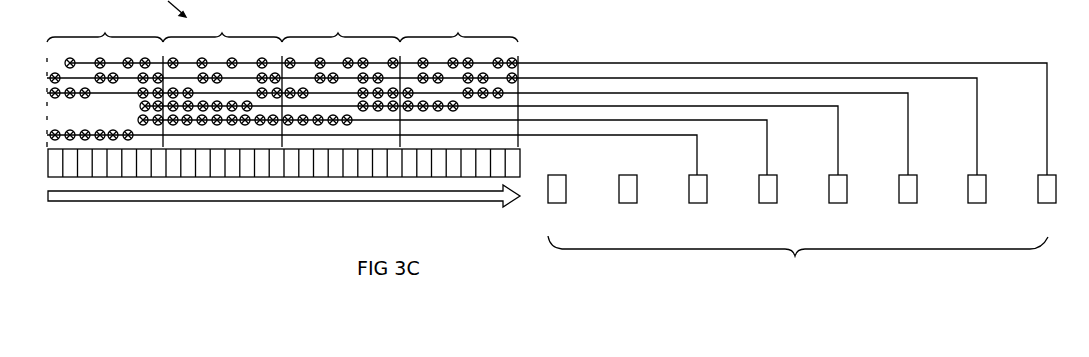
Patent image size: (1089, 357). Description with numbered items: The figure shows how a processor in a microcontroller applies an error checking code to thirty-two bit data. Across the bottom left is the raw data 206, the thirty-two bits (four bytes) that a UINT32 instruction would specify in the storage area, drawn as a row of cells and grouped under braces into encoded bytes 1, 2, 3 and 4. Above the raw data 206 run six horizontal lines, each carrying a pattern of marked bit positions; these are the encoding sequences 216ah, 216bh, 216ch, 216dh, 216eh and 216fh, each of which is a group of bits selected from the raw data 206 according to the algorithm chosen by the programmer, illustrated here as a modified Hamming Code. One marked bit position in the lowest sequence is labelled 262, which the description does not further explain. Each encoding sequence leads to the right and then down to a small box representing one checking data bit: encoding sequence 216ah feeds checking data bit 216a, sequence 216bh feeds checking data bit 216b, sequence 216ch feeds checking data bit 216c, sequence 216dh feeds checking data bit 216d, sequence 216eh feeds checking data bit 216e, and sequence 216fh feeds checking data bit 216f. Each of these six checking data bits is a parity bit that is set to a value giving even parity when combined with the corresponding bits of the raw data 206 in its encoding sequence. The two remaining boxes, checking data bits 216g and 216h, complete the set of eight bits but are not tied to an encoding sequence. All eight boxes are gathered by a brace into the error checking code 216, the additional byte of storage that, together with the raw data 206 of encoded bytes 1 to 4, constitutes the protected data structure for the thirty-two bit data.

The encoded byte 1 is at (459, 25).
The encoded byte 2 is at (341, 25).
The encoded byte 3 is at (222, 25).
The encoded byte 4 is at (105, 25).
The raw data 206 is at (520, 163).
The memory cell 262 is at (113, 130).
The error checking code 216 is at (784, 228).
The checking data bit 216a is at (1047, 203).
The checking data bit 216b is at (977, 203).
The checking data bit 216c is at (908, 203).
The checking data bit 216d is at (838, 203).
The checking data bit 216e is at (768, 203).
The checking data bit 216f is at (698, 203).
The checking data bit 216g is at (628, 203).
The checking data bit 216h is at (557, 203).
The encoding sequence 216ah is at (991, 63).
The encoding sequence 216bh is at (922, 78).
The encoding sequence 216ch is at (845, 92).
The encoding sequence 216dh is at (770, 106).
The encoding sequence 216eh is at (698, 120).
The encoding sequence 216fh is at (637, 135).